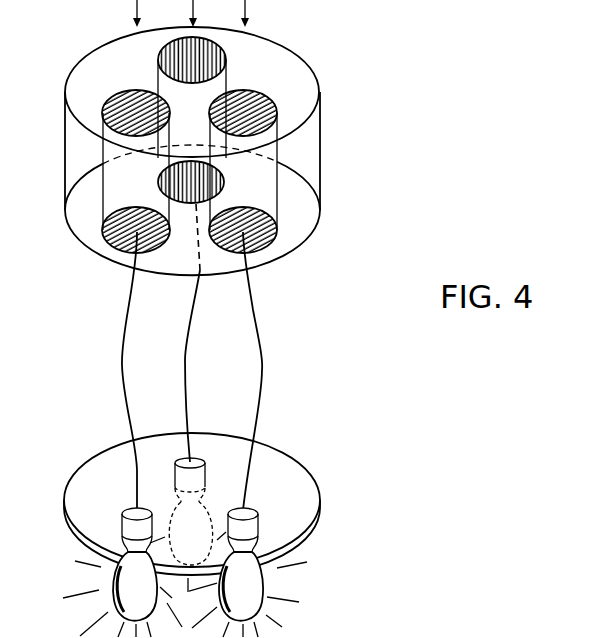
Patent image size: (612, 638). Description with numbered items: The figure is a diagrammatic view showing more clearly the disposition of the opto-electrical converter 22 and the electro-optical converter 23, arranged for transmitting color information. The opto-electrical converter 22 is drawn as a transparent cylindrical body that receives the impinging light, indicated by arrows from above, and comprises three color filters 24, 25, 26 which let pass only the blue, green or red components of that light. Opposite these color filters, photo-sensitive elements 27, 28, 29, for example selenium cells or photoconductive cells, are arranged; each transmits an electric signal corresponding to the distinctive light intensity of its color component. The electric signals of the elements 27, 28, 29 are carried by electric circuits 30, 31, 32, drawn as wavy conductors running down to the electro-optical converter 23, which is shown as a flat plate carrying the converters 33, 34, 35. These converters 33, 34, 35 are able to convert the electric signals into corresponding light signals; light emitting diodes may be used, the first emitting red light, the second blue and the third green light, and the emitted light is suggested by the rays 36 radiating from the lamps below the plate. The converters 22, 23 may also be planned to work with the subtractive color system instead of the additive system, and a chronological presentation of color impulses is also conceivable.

The opto-electrical converter 22 is at (334, 63).
The electro-optical converter 23 is at (338, 488).
The color filter 24 is at (104, 112).
The color filter 25 is at (217, 55).
The color filter 26 is at (276, 113).
The photo-sensitive element 27 is at (135, 232).
The photo-sensitive element 28 is at (222, 187).
The photo-sensitive element 29 is at (245, 232).
The electric circuit 30 is at (122, 361).
The electric circuit 31 is at (185, 344).
The electric circuit 32 is at (262, 342).
The converter 33 is at (132, 580).
The converter 34 is at (208, 510).
The converter 35 is at (255, 579).
The light rays 36 is at (224, 585).